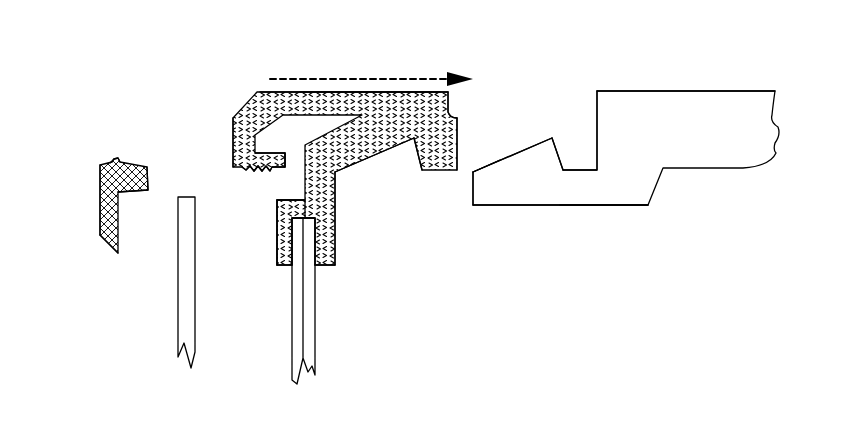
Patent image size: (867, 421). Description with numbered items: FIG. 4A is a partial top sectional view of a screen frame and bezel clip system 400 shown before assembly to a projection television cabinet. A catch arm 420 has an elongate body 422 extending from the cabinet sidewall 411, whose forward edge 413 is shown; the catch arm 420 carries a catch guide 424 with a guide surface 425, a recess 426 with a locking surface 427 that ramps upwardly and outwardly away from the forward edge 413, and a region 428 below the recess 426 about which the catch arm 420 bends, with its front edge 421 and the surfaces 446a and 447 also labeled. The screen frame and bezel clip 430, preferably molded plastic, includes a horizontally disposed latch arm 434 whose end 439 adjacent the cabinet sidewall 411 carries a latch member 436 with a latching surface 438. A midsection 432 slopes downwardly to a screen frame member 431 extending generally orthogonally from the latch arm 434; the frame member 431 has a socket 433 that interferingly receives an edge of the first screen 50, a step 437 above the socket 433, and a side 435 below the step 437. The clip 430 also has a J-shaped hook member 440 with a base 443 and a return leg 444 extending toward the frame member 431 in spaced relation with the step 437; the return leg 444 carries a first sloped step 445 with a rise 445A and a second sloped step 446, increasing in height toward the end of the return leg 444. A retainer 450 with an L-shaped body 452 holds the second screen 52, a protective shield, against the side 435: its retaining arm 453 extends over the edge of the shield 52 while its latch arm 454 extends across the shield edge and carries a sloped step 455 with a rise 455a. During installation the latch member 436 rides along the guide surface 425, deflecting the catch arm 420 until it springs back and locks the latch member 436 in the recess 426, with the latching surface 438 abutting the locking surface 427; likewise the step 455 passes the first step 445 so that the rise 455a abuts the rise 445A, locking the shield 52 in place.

The screen frame and bezel clip system 400 is at (658, 281).
The cabinet sidewall 411 is at (707, 153).
The forward edge of the cabinet side wall 413 is at (597, 91).
The catch arm 420 is at (538, 207).
The front edge of frame member 421 is at (473, 192).
The elongate body 422 is at (583, 207).
The catch guide 424 is at (522, 150).
The guide surface 425 is at (483, 168).
The recess 426 is at (575, 137).
The locking surface 427 is at (557, 140).
The region 428 is at (568, 192).
The screen frame and bezel clip 430 is at (337, 183).
The screen frame member 431 is at (277, 230).
The midsection 432 is at (368, 162).
The socket 433 is at (300, 236).
The latch arm 434 is at (392, 94).
The side of the frame member 435 is at (277, 258).
The latch member 436 is at (458, 140).
The step 437 is at (276, 218).
The latching surface 438 is at (418, 160).
The end of the latch arm 439 is at (458, 115).
The J-shaped hook member 440 is at (230, 116).
The base 443 is at (233, 141).
The return leg 444 is at (277, 152).
The first sloped step 445 is at (257, 167).
The rise of the first step 445A is at (268, 170).
The second sloped step 446 is at (277, 200).
The edge of opening 446a is at (271, 168).
The top wall of elastic member 447 is at (280, 91).
The retainer 450 is at (139, 150).
The L-shaped body 452 is at (100, 175).
The retaining arm 453 is at (103, 249).
The latch arm 454 is at (137, 198).
The sloped step 455 is at (115, 160).
The rise of the latch arm step 455a is at (113, 163).
The first screen 50 is at (318, 282).
The second screen 52 is at (182, 301).